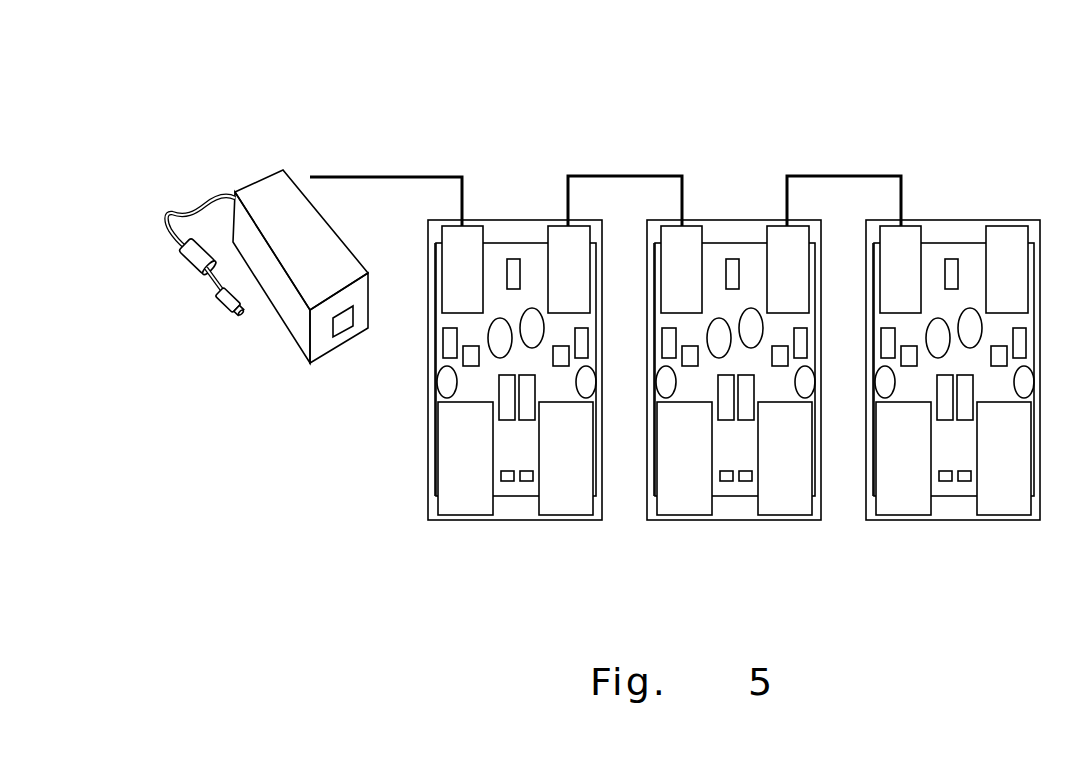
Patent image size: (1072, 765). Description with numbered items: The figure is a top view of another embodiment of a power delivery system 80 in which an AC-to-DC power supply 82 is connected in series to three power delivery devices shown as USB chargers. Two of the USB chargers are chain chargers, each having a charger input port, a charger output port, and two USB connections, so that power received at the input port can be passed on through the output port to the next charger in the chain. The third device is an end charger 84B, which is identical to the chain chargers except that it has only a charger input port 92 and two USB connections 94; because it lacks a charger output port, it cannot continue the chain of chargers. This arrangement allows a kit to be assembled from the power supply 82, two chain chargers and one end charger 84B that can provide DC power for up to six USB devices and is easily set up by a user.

The power delivery system 80 is at (781, 122).
The AC-to-DC power supply 82 is at (268, 212).
The end charger 84B is at (955, 200).
The charger input port 92 is at (908, 247).
The USB connections 94 is at (908, 505).